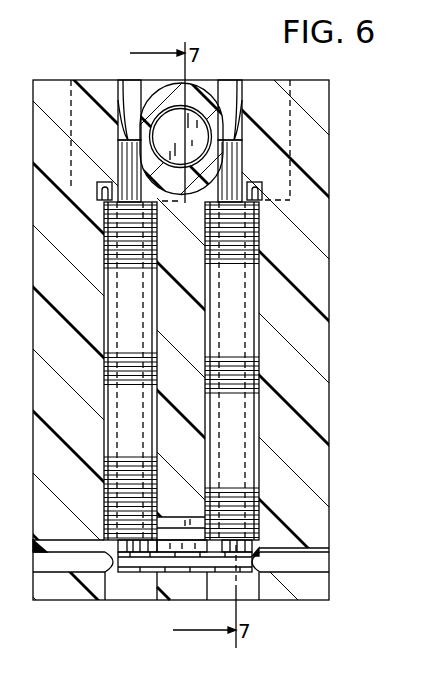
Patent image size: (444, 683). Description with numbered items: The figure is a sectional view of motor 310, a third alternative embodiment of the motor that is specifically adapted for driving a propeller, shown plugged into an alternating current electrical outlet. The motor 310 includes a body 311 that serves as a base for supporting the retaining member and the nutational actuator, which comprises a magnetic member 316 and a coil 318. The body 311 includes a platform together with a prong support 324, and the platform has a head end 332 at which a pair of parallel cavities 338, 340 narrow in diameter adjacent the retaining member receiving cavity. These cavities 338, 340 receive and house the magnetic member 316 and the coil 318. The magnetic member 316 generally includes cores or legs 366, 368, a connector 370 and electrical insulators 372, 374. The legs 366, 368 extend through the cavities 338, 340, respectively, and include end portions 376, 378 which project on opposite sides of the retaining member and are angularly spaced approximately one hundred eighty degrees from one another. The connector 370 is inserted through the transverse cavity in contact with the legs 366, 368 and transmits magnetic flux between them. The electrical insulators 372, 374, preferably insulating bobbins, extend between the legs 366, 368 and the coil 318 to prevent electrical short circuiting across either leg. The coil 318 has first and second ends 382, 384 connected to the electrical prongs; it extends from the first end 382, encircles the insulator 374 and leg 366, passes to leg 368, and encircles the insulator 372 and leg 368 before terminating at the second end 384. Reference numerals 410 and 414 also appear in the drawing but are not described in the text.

The motor 310 is at (347, 143).
The body 311 is at (329, 447).
The magnetic member 316 is at (133, 576).
The coil 318 is at (232, 377).
The prong support 324 is at (222, 652).
The head end 332 is at (95, 68).
The cavity 338 is at (247, 597).
The cavity 340 is at (160, 588).
The leg 366 is at (125, 80).
The leg 368 is at (239, 80).
The connector 370 is at (118, 578).
The electrical insulator 372 is at (260, 552).
The electrical insulator 374 is at (103, 545).
The end portion 376 is at (245, 160).
The end portion 378 is at (117, 163).
The first end 382 is at (100, 195).
The second end 384 is at (265, 200).
The connector 410 is at (377, 682).
The pin 414 is at (408, 677).